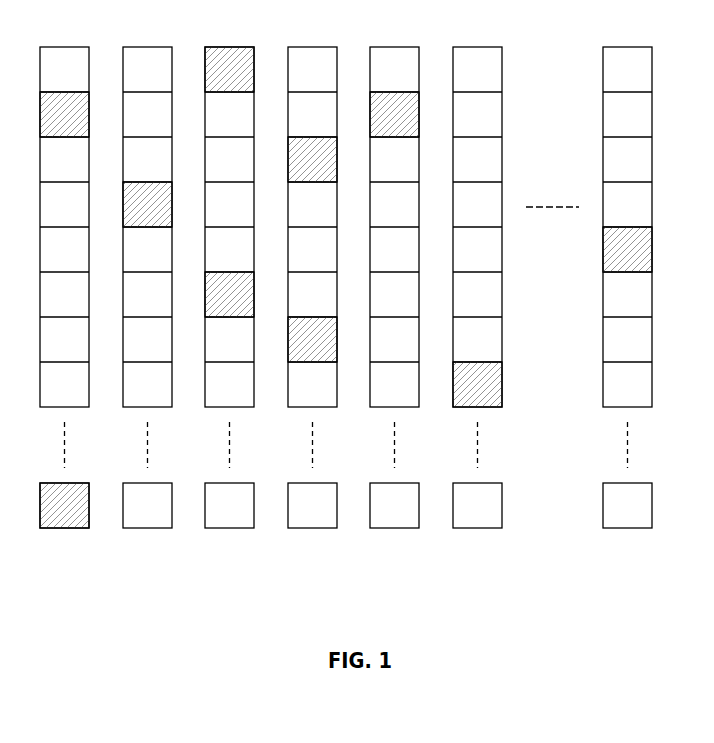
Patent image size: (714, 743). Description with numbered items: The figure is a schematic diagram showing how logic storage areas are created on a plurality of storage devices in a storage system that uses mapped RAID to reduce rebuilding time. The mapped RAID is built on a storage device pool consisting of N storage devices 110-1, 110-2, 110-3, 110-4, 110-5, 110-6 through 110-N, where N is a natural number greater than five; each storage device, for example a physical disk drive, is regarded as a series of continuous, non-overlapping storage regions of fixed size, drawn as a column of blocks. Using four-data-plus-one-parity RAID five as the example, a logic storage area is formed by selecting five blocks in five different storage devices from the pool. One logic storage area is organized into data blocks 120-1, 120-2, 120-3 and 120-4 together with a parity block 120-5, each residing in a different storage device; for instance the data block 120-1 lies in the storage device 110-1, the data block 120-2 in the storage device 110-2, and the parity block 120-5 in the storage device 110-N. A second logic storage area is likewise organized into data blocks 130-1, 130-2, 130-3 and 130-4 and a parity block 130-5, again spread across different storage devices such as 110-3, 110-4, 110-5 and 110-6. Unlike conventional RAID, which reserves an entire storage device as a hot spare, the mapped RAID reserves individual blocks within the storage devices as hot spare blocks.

The storage device 110-1 is at (43, 47).
The storage device 110-2 is at (126, 47).
The storage device 110-3 is at (208, 47).
The storage device 110-4 is at (291, 47).
The storage device 110-5 is at (373, 47).
The storage device 110-6 is at (456, 47).
The storage device 110-N is at (606, 47).
The data block 120-1 is at (46, 122).
The data block 120-2 is at (166, 212).
The data block 120-3 is at (248, 302).
The data block 120-4 is at (294, 168).
The parity block 120-5 is at (646, 258).
The data block 130-1 is at (46, 514).
The data block 130-2 is at (248, 78).
The data block 130-3 is at (294, 348).
The data block 130-4 is at (376, 122).
The parity block 130-5 is at (496, 392).